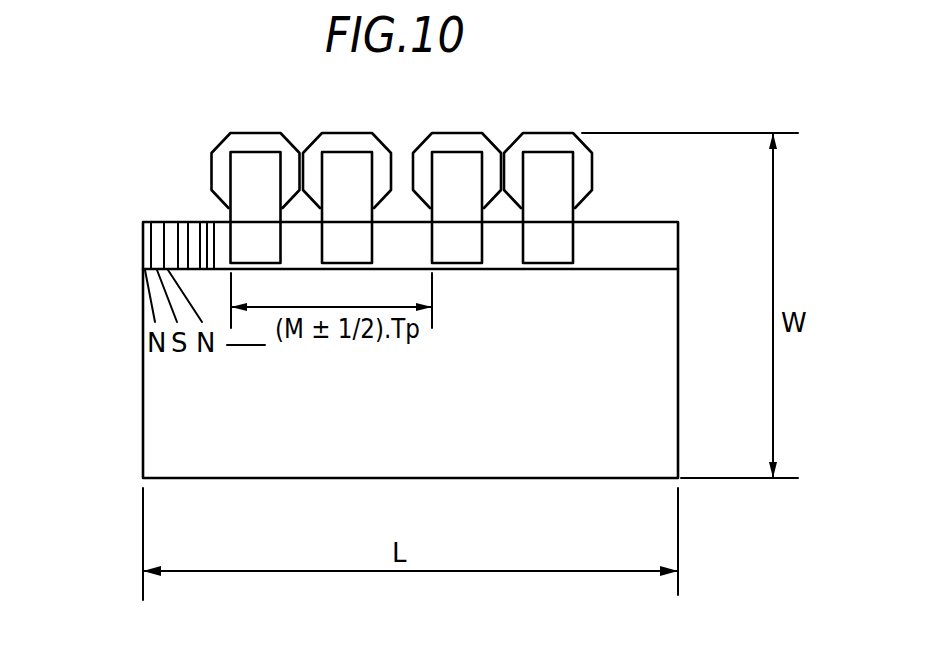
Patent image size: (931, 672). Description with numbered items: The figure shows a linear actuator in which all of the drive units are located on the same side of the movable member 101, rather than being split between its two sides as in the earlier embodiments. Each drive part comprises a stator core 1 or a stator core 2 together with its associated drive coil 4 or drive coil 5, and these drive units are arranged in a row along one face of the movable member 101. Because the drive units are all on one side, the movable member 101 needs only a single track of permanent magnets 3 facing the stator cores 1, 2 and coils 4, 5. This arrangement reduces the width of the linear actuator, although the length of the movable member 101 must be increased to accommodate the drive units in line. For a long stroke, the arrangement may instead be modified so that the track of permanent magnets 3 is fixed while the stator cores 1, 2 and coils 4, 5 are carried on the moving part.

The stator core 1 is at (263, 215).
The stator core 2 is at (355, 215).
The track of permanent magnets 3 is at (421, 226).
The drive coil 4 is at (249, 142).
The drive coil 5 is at (348, 142).
The movable member 101 is at (133, 390).